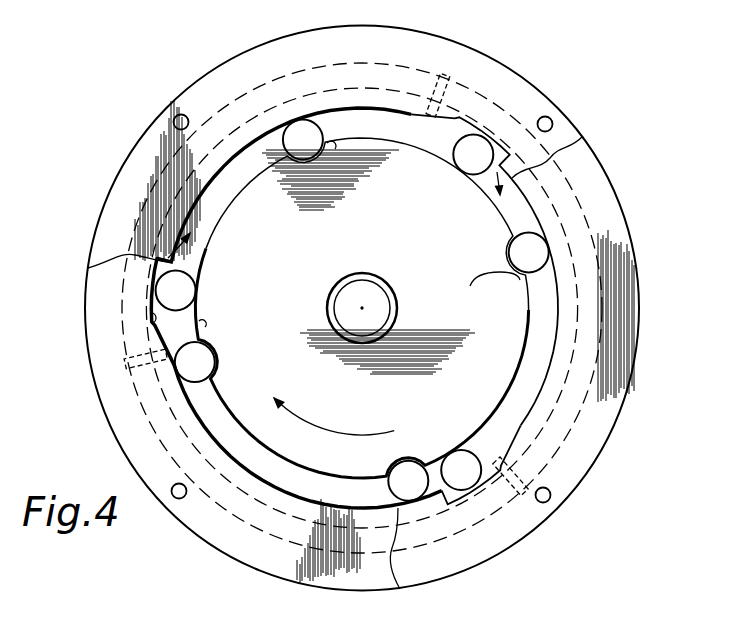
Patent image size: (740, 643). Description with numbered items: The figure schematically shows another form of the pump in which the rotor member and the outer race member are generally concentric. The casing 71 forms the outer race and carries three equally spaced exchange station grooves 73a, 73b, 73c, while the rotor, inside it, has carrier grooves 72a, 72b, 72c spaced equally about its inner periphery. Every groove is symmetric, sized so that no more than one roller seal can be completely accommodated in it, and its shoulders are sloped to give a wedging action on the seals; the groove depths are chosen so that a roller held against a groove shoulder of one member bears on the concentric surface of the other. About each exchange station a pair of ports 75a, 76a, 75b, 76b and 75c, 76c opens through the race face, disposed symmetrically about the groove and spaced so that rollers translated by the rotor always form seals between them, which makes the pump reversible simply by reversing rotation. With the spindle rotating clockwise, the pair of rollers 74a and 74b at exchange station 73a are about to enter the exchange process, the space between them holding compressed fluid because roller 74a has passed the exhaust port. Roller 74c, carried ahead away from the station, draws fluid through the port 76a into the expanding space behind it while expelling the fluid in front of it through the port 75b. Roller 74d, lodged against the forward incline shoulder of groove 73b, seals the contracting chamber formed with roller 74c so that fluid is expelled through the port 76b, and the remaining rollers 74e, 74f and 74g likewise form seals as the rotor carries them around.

The casing 71 is at (206, 92).
The carrier groove 72a is at (206, 322).
The carrier groove 72b is at (340, 148).
The carrier groove 72c is at (472, 300).
The exchange station groove 73a is at (150, 318).
The exchange station groove 73b is at (462, 116).
The exchange station groove 73c is at (480, 480).
The roller seal 74a is at (215, 362).
The roller seal 74b is at (196, 290).
The roller seal 74c is at (305, 160).
The roller seal 74d is at (468, 173).
The roller seal 74e is at (527, 273).
The roller seal 74f is at (450, 455).
The roller seal 74g is at (398, 465).
The port 75a is at (152, 368).
The port 75b is at (437, 75).
The port 75c is at (522, 478).
The port 76a is at (88, 268).
The port 76b is at (583, 136).
The port 76c is at (400, 589).